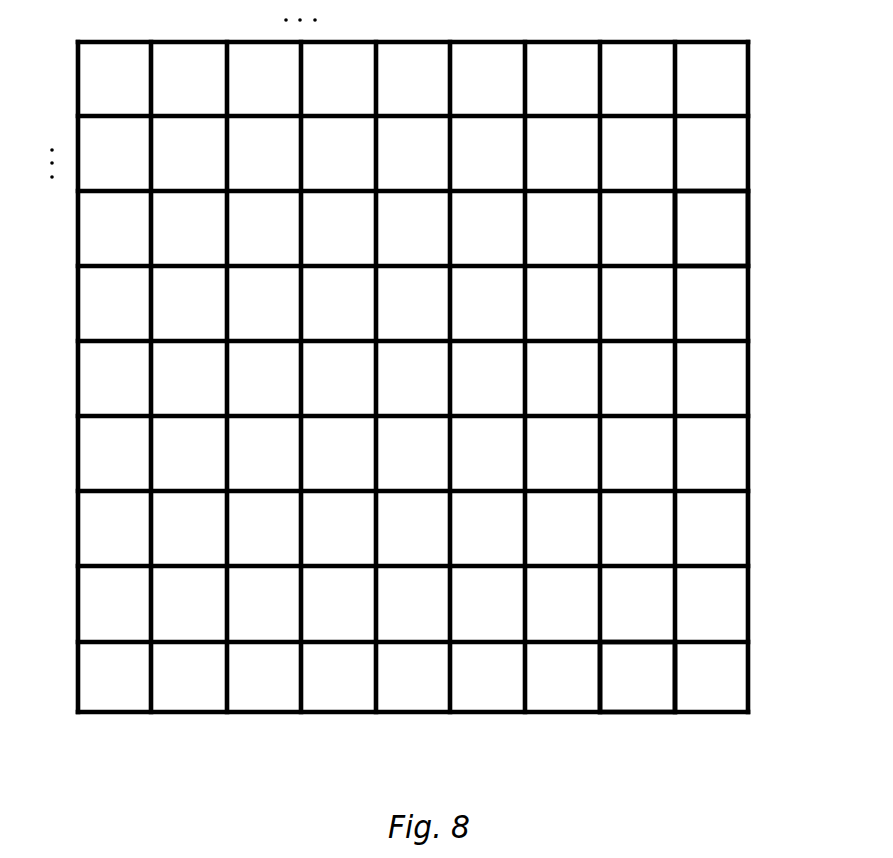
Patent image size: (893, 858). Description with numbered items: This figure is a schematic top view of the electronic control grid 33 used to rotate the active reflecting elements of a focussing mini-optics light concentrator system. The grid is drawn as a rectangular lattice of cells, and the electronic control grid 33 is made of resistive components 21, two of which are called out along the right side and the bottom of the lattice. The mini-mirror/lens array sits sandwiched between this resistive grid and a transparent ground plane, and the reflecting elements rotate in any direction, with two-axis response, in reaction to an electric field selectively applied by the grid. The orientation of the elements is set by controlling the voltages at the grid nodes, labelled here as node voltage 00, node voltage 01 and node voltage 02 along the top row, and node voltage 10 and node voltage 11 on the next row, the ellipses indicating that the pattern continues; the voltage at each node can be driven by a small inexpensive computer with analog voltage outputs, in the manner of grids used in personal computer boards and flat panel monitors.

The resistive component 21 is at (750, 307).
The electronic control grid 33 is at (804, 682).
The node voltage V00 00 is at (76, 18).
The node voltage V01 01 is at (155, 18).
The node voltage V02 02 is at (233, 18).
The node voltage V10 10 is at (55, 111).
The node voltage V11 11 is at (133, 95).